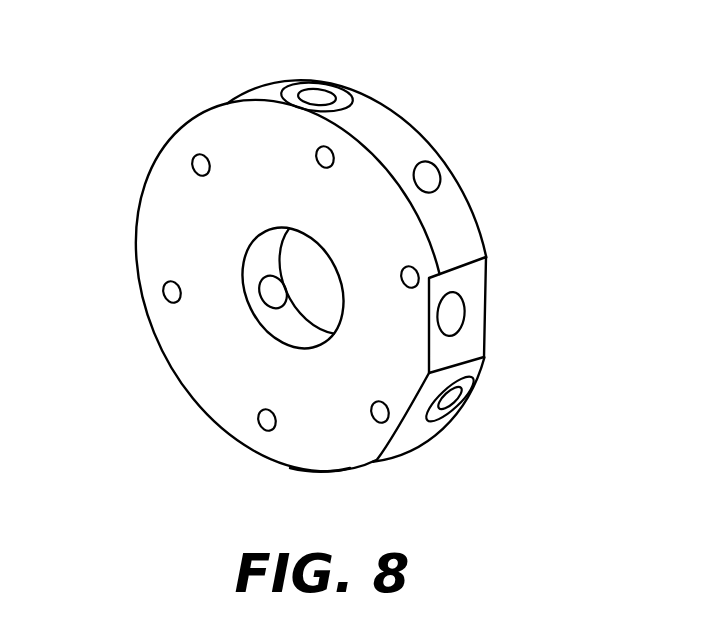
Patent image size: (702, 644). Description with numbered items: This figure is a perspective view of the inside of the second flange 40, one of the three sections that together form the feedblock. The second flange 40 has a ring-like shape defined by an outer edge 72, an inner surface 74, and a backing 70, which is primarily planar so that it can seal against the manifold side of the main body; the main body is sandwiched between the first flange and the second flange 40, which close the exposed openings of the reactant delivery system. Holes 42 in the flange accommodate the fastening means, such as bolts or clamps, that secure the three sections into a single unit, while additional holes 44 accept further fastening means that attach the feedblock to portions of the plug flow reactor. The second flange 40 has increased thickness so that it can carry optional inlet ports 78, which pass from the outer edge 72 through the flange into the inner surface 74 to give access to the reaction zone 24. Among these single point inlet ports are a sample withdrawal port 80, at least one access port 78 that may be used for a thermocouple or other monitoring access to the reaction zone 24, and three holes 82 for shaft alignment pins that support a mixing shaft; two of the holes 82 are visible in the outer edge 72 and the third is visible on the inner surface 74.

The reaction zone 24 is at (329, 293).
The second flange 40 is at (197, 356).
The holes 42 is at (196, 163).
The holes 44 is at (163, 293).
The backing 70 is at (322, 450).
The outer edge 72 is at (393, 128).
The inner surface 74 is at (292, 333).
The inlet ports 78 is at (426, 178).
The sample withdrawal port 80 is at (452, 313).
The holes 82 is at (316, 96).